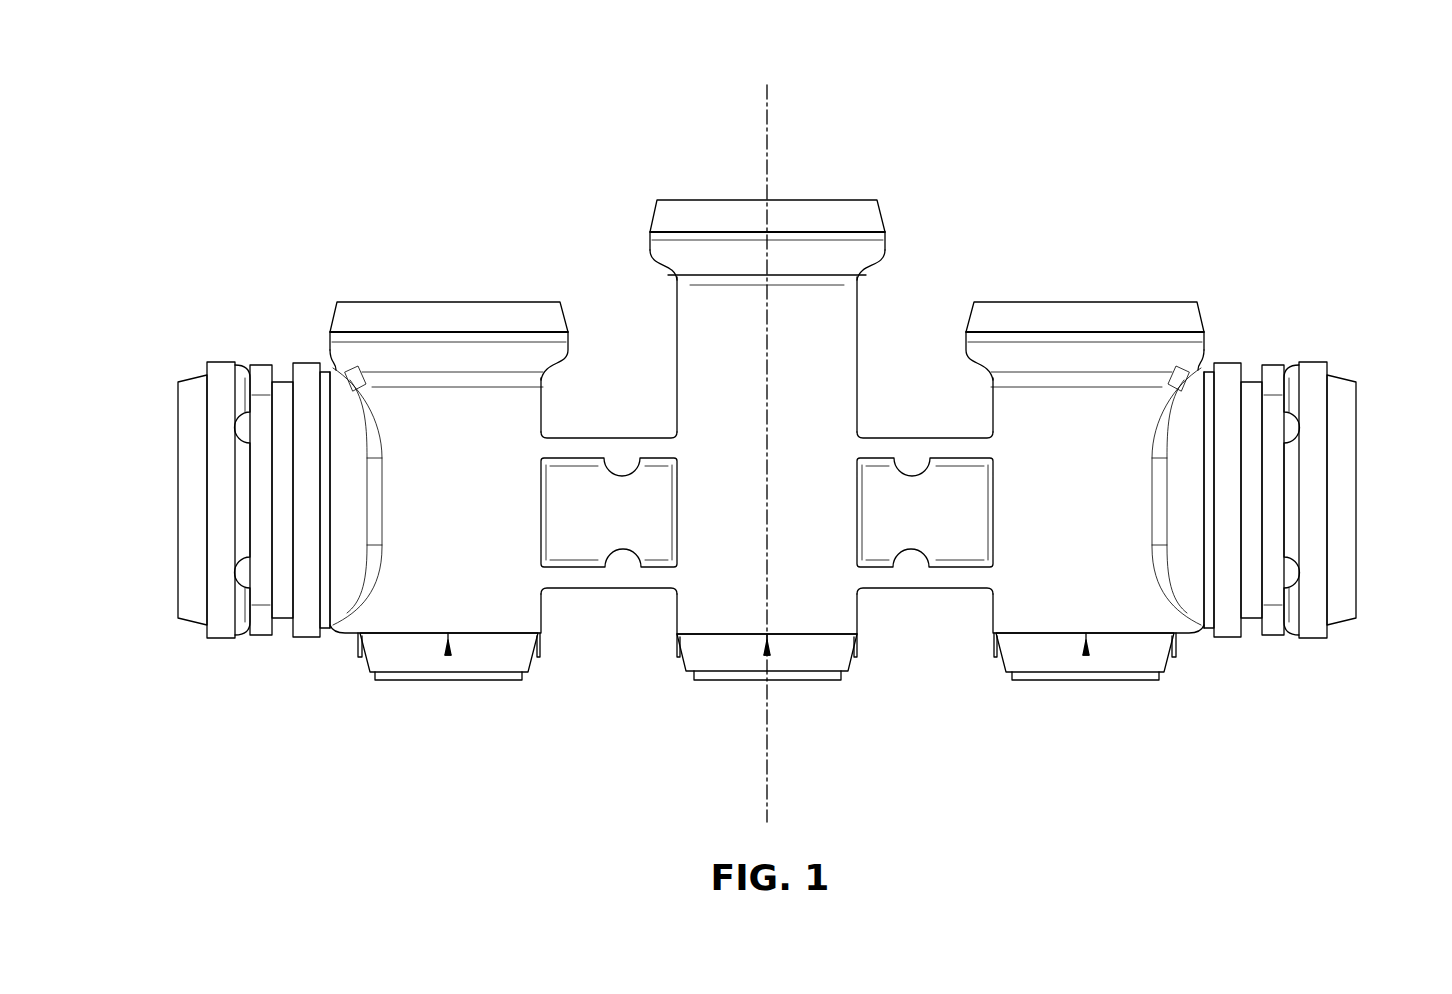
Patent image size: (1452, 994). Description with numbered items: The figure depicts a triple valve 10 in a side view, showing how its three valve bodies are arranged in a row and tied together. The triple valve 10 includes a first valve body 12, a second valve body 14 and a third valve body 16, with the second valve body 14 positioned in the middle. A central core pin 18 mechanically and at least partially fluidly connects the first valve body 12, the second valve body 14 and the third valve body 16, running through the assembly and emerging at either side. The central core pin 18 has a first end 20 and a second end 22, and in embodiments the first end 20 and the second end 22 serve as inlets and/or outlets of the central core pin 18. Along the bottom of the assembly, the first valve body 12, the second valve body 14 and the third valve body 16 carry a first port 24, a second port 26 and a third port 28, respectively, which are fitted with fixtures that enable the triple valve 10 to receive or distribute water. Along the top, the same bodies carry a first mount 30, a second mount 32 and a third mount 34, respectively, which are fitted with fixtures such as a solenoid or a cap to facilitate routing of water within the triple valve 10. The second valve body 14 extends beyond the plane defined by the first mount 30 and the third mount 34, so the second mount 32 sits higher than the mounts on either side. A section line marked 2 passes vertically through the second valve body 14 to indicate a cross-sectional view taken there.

The triple valve 10 is at (1293, 148).
The first valve body 12 is at (522, 422).
The second valve body 14 is at (825, 323).
The third valve body 16 is at (1012, 422).
The central core pin 18 is at (937, 590).
The first end 20 is at (176, 433).
The second end 22 is at (1358, 433).
The first port 24 is at (434, 690).
The second port 26 is at (718, 689).
The third port 28 is at (1071, 690).
The first mount 30 is at (384, 302).
The second mount 32 is at (707, 198).
The third mount 34 is at (1030, 302).
The section line 2 is at (692, 822).